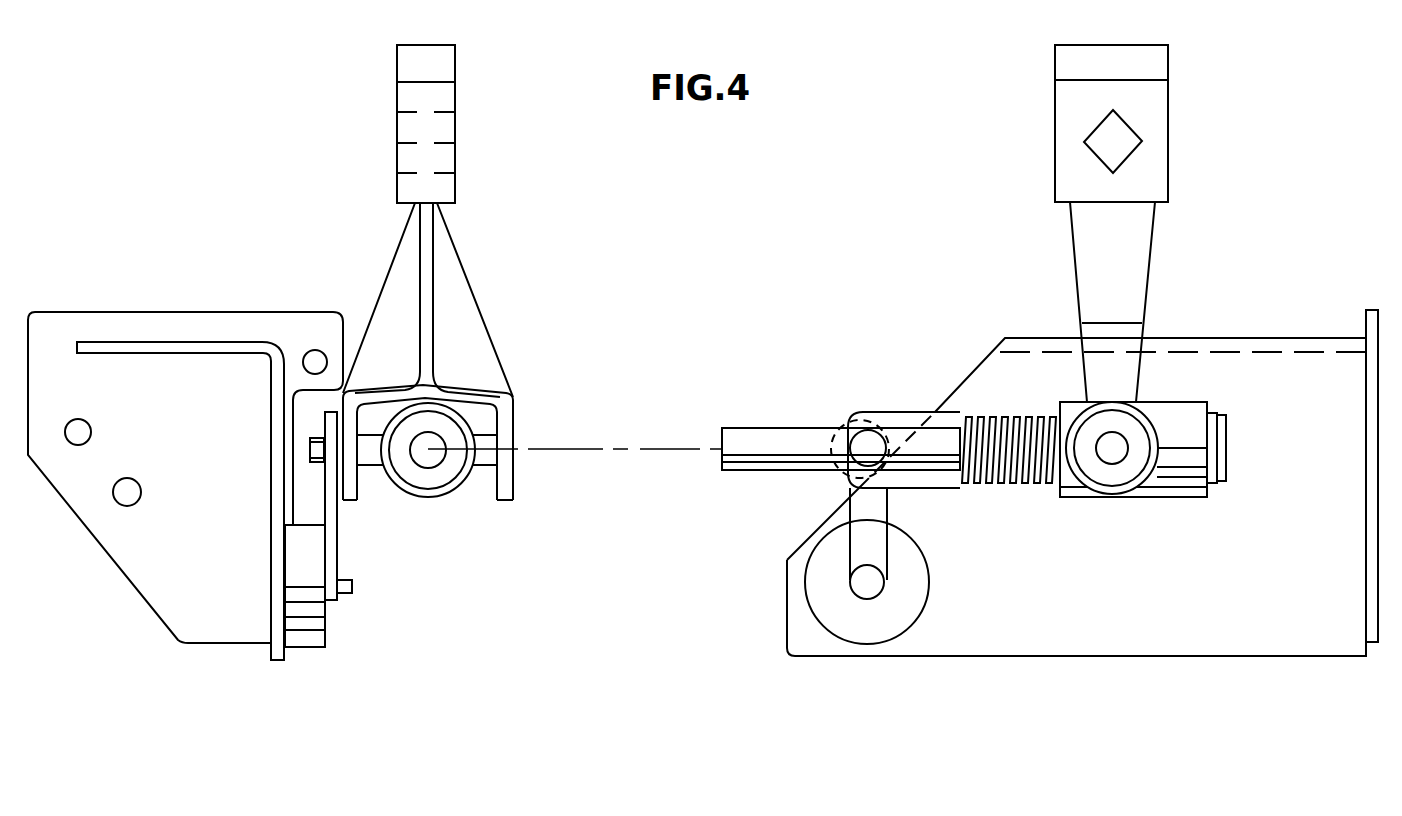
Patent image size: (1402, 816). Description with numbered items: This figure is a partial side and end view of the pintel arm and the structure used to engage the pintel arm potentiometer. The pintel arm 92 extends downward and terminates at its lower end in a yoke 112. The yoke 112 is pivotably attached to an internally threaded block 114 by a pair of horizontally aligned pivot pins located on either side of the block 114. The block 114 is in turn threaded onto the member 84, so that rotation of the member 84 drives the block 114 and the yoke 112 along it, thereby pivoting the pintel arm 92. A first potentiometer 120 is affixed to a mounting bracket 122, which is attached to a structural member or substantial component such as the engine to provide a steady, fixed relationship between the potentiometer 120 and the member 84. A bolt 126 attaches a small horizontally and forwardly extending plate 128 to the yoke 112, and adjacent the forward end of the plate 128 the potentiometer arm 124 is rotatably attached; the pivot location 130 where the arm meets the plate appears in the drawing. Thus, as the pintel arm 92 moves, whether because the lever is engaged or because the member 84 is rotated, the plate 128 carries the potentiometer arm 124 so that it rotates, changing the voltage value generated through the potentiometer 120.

The member 84 is at (428, 497).
The pintel arm 92 is at (1145, 237).
The yoke 112 is at (503, 410).
The internally threaded block 114 is at (1180, 467).
The first potentiometer 120 is at (310, 628).
The mounting bracket 122 is at (173, 603).
The potentiometer arm 124 is at (333, 543).
The bolt 126 is at (310, 450).
The plate 128 is at (337, 417).
The pivot pin 130 is at (857, 434).